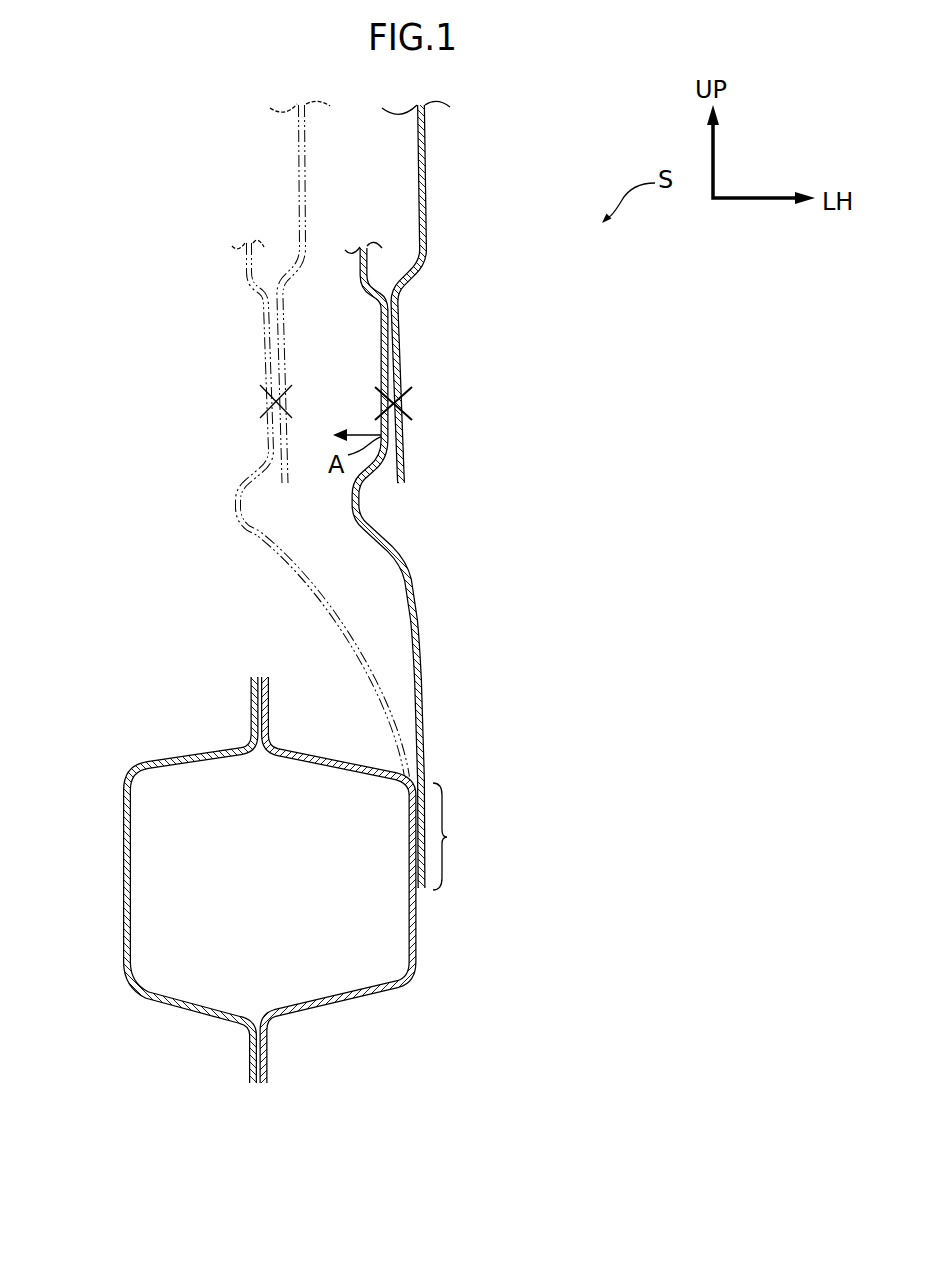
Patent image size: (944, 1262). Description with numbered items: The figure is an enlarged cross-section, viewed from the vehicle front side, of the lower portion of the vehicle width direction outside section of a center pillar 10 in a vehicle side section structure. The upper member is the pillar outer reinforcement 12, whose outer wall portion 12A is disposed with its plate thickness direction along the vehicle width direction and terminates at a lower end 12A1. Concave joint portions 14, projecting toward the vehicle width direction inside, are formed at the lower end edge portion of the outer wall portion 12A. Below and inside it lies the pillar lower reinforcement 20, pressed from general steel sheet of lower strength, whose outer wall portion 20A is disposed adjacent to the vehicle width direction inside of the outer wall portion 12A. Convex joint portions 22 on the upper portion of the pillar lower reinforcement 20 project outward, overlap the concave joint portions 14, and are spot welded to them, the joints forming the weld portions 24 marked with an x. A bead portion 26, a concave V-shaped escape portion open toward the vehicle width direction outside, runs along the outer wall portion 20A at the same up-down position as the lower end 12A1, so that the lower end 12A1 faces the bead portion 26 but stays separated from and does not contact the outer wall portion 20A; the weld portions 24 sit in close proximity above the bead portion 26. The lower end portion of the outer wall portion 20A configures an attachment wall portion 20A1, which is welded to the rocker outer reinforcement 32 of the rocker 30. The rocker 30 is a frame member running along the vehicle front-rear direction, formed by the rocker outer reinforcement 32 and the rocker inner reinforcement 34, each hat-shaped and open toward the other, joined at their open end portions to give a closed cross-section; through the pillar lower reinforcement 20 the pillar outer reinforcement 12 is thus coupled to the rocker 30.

The center pillar 10 is at (524, 152).
The pillar outer reinforcement 12 is at (428, 152).
The outer wall portion 12A is at (430, 214).
The lower end 12A1 is at (405, 490).
The concave joint portion 14 is at (402, 334).
The pillar lower reinforcement 20 is at (383, 566).
The outer wall portion 20A is at (413, 602).
The attachment wall portion 20A1 is at (470, 835).
The convex joint portion 22 is at (380, 368).
The weld portion 24 is at (403, 400).
The bead portion 26 is at (237, 507).
The rocker 30 is at (283, 880).
The rocker outer reinforcement 32 is at (377, 990).
The rocker inner reinforcement 34 is at (120, 962).